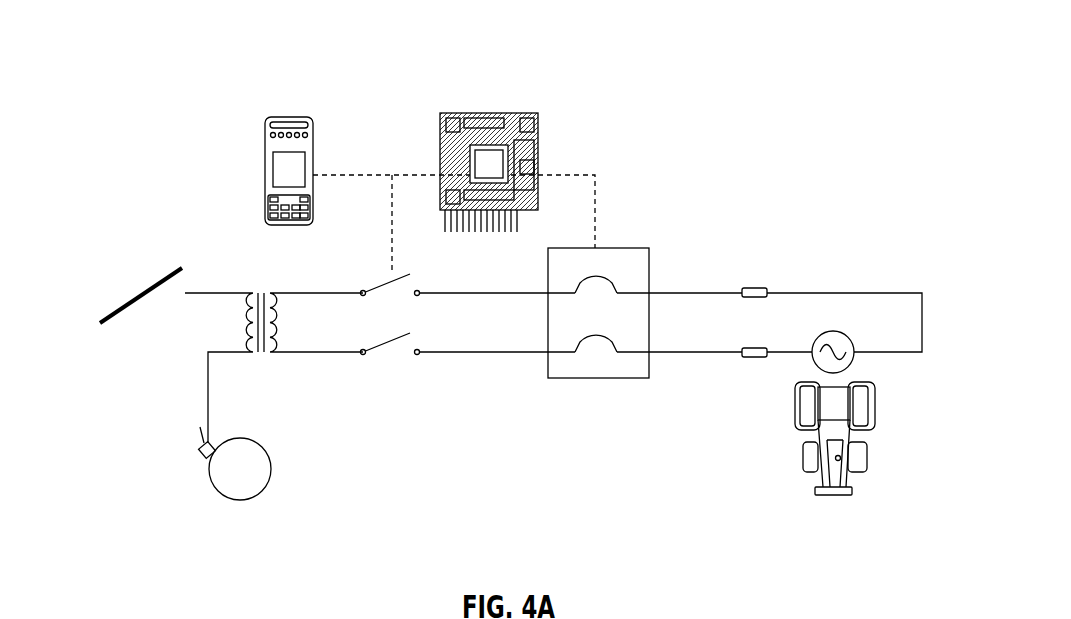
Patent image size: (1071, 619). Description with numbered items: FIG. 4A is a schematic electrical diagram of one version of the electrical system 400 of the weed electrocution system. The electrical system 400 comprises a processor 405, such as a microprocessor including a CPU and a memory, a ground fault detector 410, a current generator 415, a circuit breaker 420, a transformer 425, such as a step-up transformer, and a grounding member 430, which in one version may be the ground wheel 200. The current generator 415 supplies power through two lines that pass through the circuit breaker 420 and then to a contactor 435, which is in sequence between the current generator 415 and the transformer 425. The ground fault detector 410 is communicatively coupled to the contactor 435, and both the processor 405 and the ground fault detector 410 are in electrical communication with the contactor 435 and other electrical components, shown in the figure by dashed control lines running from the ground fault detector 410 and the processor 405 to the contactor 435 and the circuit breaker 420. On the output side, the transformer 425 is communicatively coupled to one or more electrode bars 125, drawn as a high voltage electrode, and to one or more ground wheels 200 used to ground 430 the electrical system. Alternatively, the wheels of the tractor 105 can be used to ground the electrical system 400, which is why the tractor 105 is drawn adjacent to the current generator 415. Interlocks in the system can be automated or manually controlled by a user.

The electrical system 400 is at (686, 70).
The ground fault detector 410 is at (287, 46).
The processor 405 is at (521, 72).
The electrode bar 125 is at (118, 310).
The transformer 425 is at (271, 371).
The contactor 435 is at (405, 380).
The circuit breaker 420 is at (681, 192).
The current generator 415 is at (898, 363).
The tractor 105 is at (891, 460).
The grounding member 430 is at (302, 490).
The ground wheel 200 is at (213, 478).